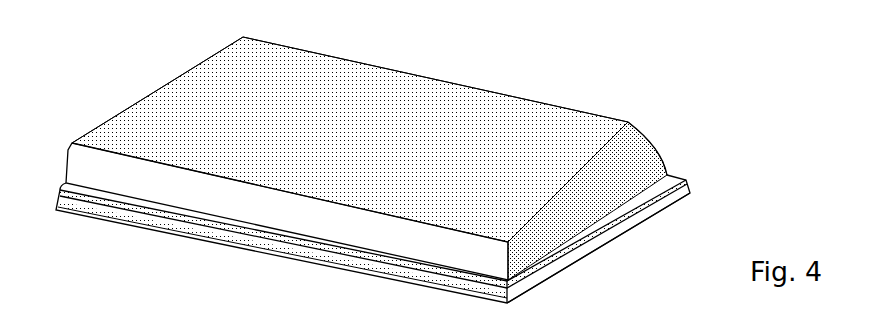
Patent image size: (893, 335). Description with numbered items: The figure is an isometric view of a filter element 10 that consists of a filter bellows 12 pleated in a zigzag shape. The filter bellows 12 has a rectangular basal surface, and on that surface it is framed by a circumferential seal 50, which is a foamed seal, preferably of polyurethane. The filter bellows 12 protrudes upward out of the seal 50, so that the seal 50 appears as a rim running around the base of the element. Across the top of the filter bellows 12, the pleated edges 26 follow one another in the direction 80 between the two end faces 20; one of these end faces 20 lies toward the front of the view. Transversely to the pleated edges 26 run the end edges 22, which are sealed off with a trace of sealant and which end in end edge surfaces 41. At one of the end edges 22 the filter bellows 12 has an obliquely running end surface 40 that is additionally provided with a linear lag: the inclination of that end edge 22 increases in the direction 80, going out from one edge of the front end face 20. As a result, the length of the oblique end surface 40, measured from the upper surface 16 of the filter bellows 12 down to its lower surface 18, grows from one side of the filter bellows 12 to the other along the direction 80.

The filter element 10 is at (363, 155).
The filter bellows 12 is at (593, 112).
The upper surface 16 is at (288, 77).
The lower surface 18 is at (363, 166).
The end face 20 is at (142, 185).
The end edge 22 is at (632, 156).
The pleated edge 26 is at (212, 60).
The oblique end surface 40 is at (592, 204).
The end edge surface 41 is at (575, 207).
The seal 50 is at (650, 207).
The direction 80 is at (348, 103).